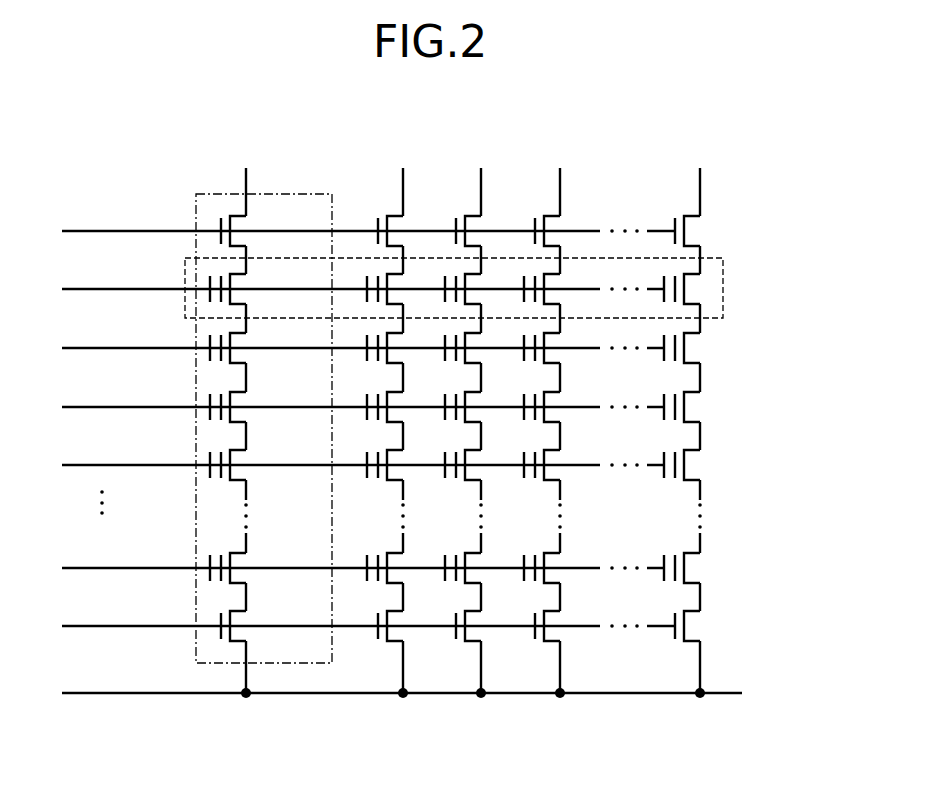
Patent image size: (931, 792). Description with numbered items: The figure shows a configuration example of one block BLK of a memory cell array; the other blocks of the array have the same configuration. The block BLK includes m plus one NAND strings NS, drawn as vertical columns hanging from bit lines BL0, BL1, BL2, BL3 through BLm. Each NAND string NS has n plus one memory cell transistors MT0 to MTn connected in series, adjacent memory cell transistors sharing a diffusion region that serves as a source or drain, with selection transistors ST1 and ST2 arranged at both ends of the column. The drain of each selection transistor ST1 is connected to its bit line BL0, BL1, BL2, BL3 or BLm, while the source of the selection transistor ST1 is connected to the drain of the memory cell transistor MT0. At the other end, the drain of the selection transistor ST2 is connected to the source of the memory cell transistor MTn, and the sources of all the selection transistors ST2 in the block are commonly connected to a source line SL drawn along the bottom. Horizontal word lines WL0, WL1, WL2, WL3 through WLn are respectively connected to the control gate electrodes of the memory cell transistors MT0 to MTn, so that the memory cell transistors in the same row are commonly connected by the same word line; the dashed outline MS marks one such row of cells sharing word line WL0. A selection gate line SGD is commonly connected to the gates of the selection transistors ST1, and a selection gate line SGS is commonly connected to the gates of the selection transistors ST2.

The NAND string NS is at (213, 192).
The memory cell group / page MS is at (723, 285).
The selection transistor ST1 is at (245, 226).
The selection transistor ST2 is at (245, 622).
The memory cell transistor MT0 is at (245, 284).
The memory cell transistor MTn is at (245, 561).
The block BLK is at (738, 672).
The bit line BL0 is at (244, 419).
The bit line BL1 is at (394, 419).
The bit line BL2 is at (471, 419).
The bit line BL3 is at (551, 419).
The bit line BLm is at (691, 419).
The selection gate line SGD is at (368, 219).
The selection gate line SGS is at (368, 615).
The word line WL0 is at (363, 277).
The word line WL1 is at (363, 336).
The word line WL2 is at (363, 395).
The word line WL3 is at (363, 453).
The word line WLn is at (363, 557).
The source line SL is at (402, 683).